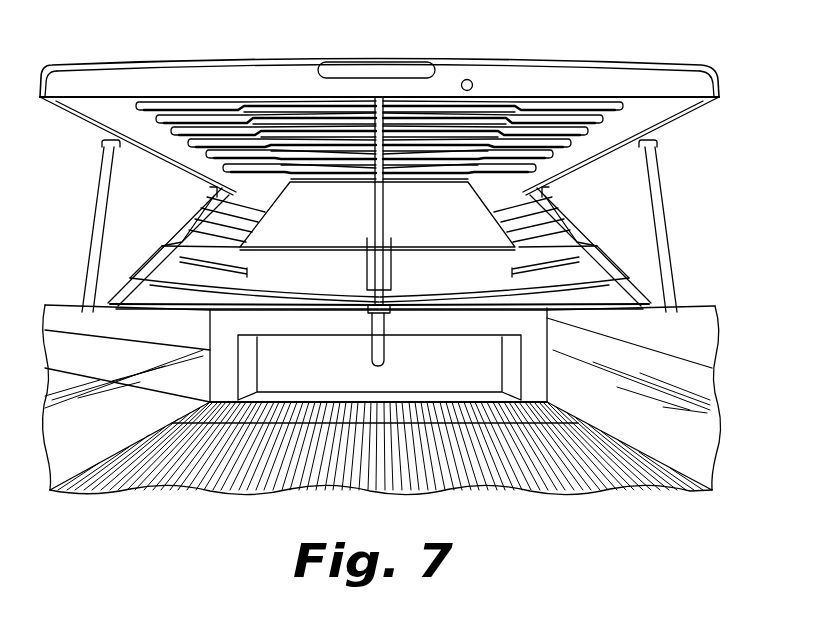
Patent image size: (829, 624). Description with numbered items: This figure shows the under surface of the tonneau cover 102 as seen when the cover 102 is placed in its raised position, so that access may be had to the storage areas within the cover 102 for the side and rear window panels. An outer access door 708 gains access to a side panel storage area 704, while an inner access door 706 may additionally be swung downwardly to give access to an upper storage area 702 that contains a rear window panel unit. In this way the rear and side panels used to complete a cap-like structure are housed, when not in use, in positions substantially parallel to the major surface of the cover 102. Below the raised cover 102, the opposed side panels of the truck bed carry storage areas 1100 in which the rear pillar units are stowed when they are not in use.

The tonneau cover 102 is at (287, 58).
The upper storage area 702 is at (427, 133).
The side panel storage area 704 is at (541, 243).
The access door 706 is at (317, 230).
The outer access door 708 is at (627, 288).
The storage areas 1100 is at (634, 437).